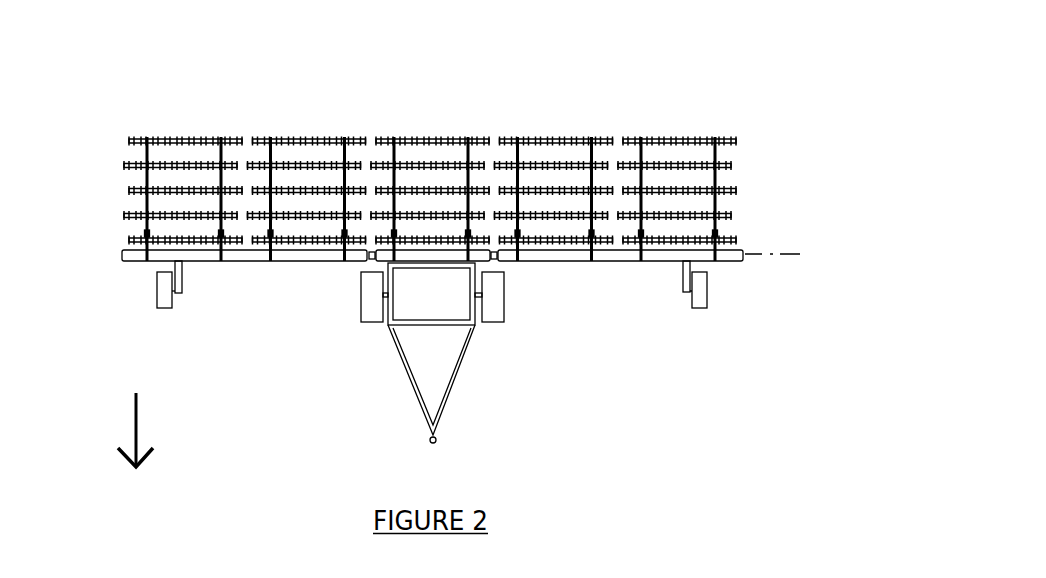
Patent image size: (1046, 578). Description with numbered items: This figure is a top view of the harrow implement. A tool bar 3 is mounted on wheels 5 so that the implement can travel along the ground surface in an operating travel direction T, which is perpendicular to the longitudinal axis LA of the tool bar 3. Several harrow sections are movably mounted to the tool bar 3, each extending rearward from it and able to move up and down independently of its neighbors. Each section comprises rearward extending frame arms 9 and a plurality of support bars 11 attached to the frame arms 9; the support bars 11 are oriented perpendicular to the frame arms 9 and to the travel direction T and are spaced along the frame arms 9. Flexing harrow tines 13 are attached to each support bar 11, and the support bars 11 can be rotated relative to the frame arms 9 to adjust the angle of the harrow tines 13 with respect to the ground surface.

The tool bar 3 is at (545, 261).
The wheels 5 is at (172, 303).
The frame arms 9 is at (716, 180).
The support bars 11 is at (730, 217).
The flexing harrow tines 13 is at (722, 140).
The longitudinal axis LA is at (800, 254).
The operating travel direction T is at (136, 428).